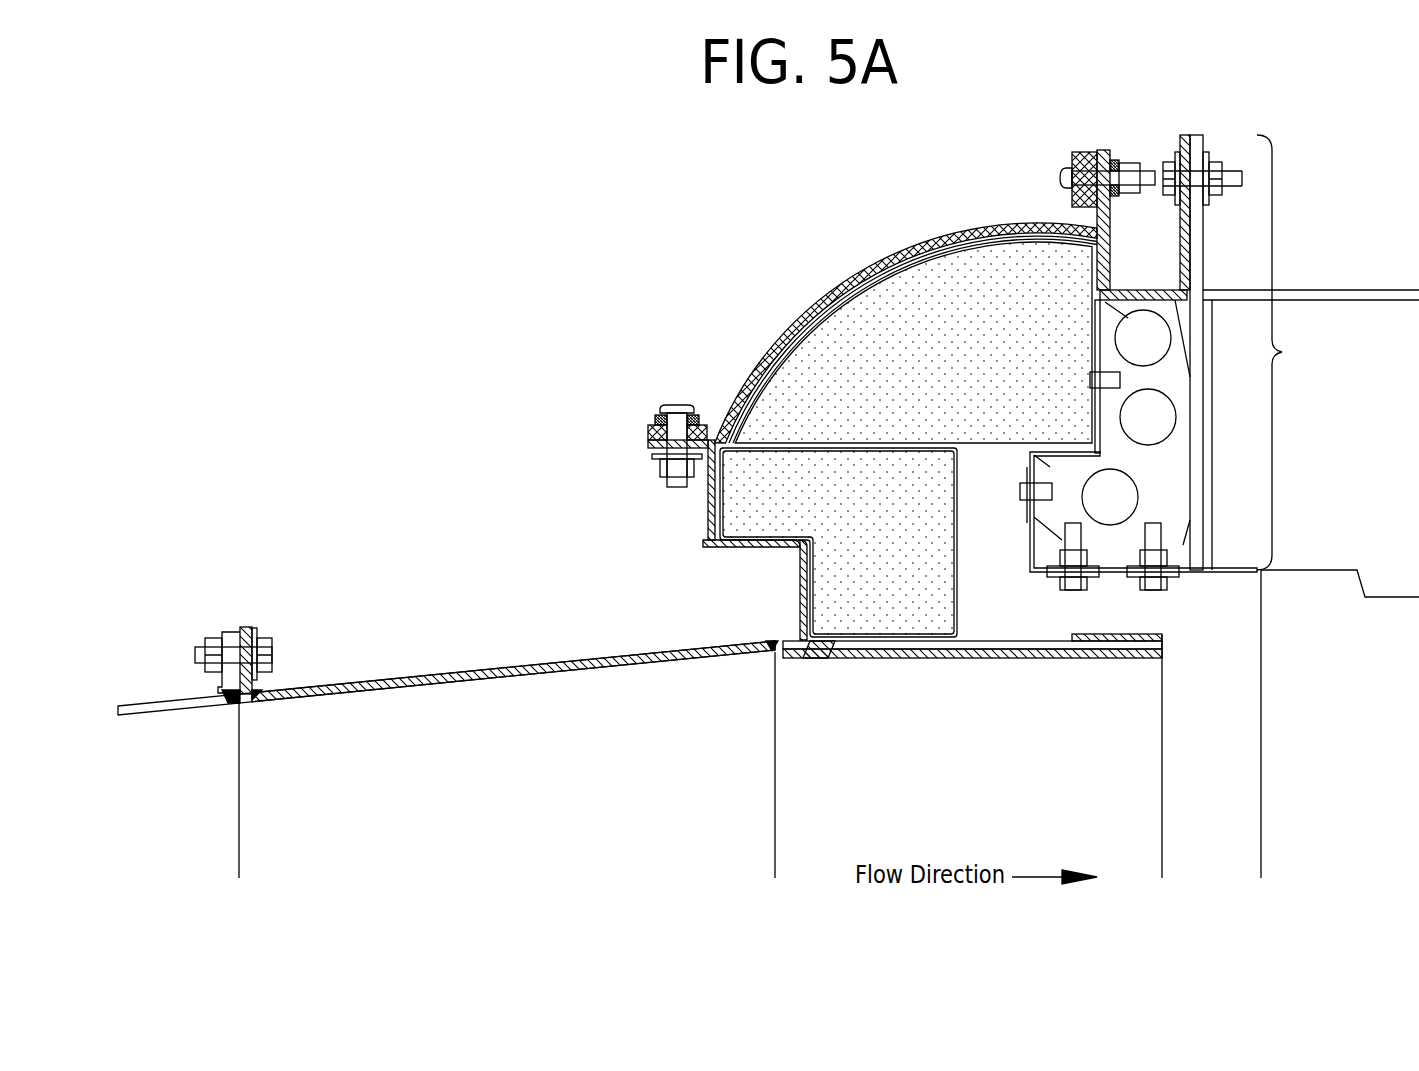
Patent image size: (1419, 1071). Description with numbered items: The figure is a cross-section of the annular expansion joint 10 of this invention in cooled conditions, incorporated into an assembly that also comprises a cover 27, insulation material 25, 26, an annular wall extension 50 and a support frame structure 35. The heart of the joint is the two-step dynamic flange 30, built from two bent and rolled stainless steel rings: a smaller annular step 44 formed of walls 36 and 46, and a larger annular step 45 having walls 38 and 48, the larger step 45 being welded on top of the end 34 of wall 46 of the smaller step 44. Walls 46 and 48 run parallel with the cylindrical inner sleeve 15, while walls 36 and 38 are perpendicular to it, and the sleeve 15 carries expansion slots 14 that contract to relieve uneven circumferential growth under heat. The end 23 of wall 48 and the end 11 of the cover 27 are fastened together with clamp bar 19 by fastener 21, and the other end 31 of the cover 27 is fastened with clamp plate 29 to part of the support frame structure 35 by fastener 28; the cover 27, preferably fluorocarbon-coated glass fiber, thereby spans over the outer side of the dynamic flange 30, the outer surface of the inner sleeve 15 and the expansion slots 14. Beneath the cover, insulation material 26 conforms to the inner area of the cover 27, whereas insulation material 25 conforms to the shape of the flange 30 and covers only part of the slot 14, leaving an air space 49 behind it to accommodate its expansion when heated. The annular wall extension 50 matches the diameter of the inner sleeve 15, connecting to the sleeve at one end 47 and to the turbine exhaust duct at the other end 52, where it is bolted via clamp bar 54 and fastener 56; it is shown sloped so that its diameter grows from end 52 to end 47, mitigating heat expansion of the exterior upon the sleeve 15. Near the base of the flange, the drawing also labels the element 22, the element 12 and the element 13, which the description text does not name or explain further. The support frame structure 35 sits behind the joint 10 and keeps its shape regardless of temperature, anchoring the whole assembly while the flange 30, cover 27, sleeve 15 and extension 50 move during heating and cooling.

The expansion joint 10 is at (540, 388).
The end of cover 11 is at (648, 436).
The flat bar 12 is at (1120, 633).
The duct wall 13 is at (1105, 660).
The expansion slots 14 is at (985, 652).
The cylindrical inner sleeve 15 is at (816, 655).
The clamp bar 19 is at (655, 420).
The fastener 21 is at (677, 422).
The base flange 22 is at (800, 638).
The end of wall 23 is at (652, 456).
The insulation material 25 is at (925, 552).
The insulation material 26 is at (958, 270).
The cover 27 is at (850, 282).
The fastener 28 is at (1062, 178).
The clamp plate 29 is at (1075, 160).
The dynamic flange 30 is at (670, 541).
The end of cover 31 is at (1105, 152).
The end of wall 34 is at (706, 541).
The support frame structure 35 is at (1287, 352).
The wall 36 is at (807, 578).
The wall 38 is at (715, 493).
The annular step 44 is at (778, 600).
The annular step 45 is at (688, 508).
The wall 46 is at (776, 548).
The end of annular wall extension 47 is at (770, 652).
The wall 48 is at (660, 468).
The air space 49 is at (1028, 600).
The annular wall extension 50 is at (437, 690).
The end of annular wall extension 52 is at (250, 706).
The clamp bar 54 is at (245, 626).
The fastener 56 is at (272, 655).